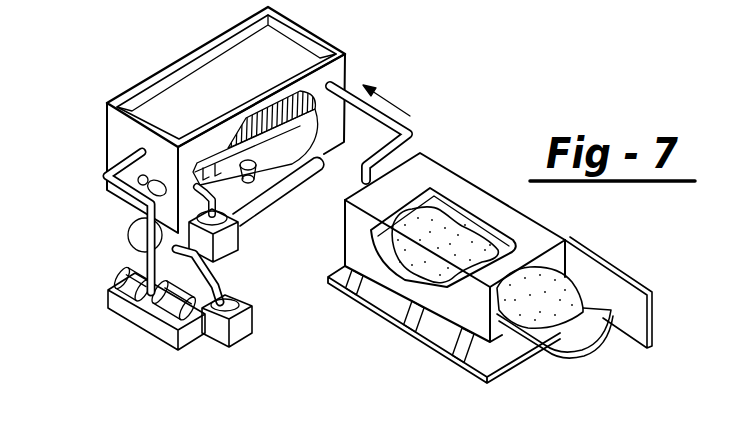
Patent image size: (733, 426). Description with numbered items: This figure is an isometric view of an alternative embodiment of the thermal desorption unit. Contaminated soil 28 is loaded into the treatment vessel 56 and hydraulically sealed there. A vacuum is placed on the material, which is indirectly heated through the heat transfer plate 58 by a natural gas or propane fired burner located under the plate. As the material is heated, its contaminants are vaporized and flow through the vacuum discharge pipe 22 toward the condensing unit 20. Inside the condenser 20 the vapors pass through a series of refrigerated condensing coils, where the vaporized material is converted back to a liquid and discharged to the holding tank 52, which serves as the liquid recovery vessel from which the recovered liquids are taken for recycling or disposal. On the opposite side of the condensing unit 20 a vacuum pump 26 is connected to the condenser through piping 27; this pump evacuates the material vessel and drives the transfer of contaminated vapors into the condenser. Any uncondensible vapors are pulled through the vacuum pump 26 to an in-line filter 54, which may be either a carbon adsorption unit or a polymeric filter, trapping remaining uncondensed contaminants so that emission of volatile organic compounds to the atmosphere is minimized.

The condensing unit 20 is at (333, 72).
The vacuum discharge pipe 22 is at (411, 134).
The vacuum pump 26 is at (123, 312).
The piping 27 is at (103, 181).
The contaminated soil 28 is at (538, 328).
The holding tank 52 is at (260, 191).
The in-line filter 54 is at (228, 248).
The treatment vessel 56 is at (584, 334).
The heat transfer plate 58 is at (345, 246).